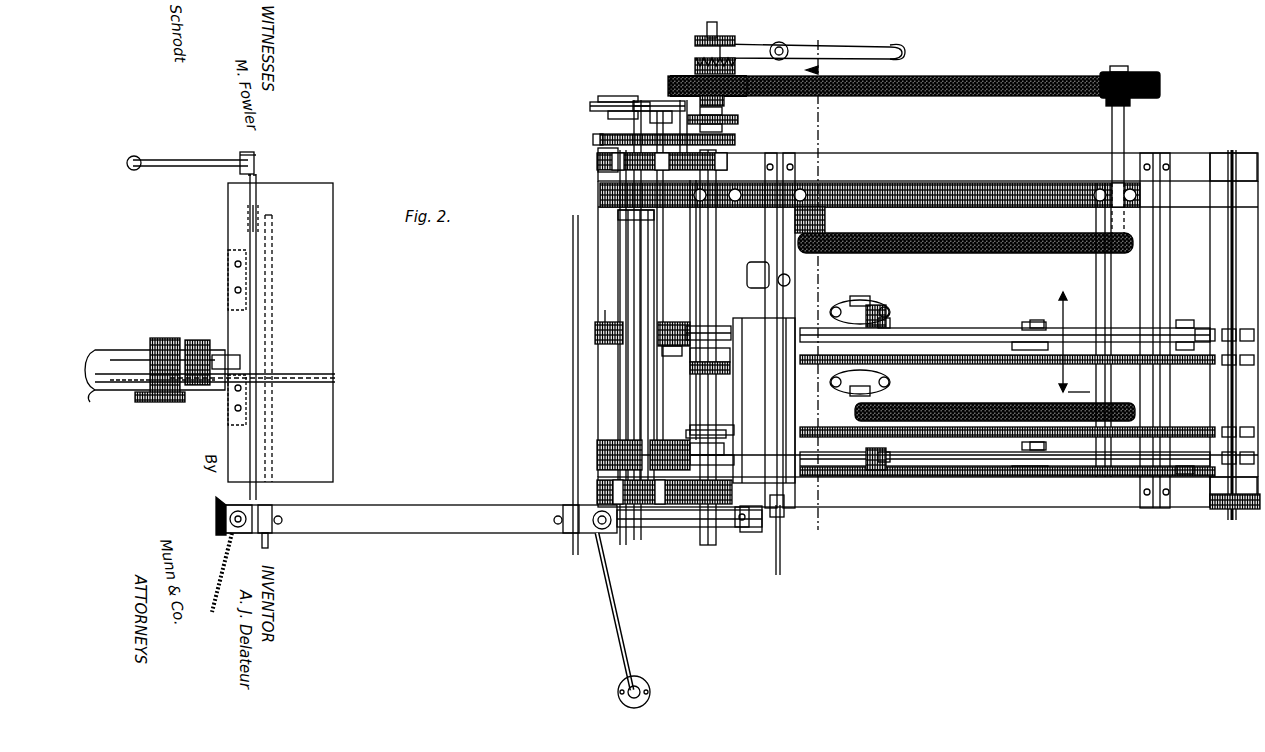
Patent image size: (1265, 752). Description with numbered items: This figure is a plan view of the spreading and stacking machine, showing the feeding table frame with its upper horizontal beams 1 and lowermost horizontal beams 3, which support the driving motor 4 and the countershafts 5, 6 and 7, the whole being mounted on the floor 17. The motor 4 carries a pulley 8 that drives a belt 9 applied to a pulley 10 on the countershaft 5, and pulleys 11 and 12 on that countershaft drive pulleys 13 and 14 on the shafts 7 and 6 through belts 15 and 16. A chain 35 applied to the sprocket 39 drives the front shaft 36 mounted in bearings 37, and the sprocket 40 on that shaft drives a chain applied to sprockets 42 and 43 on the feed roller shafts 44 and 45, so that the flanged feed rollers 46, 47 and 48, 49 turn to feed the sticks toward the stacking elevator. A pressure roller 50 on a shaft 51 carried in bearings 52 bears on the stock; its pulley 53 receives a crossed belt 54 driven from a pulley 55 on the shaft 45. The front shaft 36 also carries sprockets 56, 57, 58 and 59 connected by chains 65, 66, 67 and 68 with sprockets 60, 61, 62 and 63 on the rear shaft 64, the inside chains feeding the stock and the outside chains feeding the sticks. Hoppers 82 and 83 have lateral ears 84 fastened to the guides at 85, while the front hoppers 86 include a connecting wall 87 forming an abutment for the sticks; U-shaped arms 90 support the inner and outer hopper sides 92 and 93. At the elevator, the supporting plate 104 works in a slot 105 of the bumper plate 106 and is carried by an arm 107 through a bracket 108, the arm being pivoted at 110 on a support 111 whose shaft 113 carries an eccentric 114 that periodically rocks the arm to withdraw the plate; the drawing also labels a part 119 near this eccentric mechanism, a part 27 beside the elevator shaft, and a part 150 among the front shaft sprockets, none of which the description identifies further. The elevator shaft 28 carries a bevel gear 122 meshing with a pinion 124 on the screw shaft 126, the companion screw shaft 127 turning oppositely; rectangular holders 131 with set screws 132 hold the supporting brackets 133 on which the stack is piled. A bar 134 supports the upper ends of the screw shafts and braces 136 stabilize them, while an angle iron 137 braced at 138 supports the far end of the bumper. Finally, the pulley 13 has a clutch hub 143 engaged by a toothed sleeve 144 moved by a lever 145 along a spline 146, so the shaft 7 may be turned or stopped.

The upper horizontal beams 1 is at (1092, 500).
The lowermost horizontal beams 3 is at (950, 205).
The driving motor 4 is at (860, 296).
The countershaft 5 is at (1102, 290).
The countershaft 6 is at (800, 220).
The countershaft 7 is at (878, 317).
The pulley 8 is at (870, 296).
The belt 9 is at (962, 395).
The pulley 10 is at (1085, 392).
The pulley 11 is at (1102, 78).
The pulley 12 is at (1100, 235).
The pulley 13 is at (742, 90).
The pulley 14 is at (808, 228).
The belt 15 is at (965, 92).
The belt 16 is at (966, 252).
The floor 17 is at (1166, 258).
The rod 27 is at (782, 575).
The stacking elevator shaft 28 is at (755, 268).
The chain 35 is at (740, 120).
The front shaft 36 is at (703, 246).
The bearings 37 is at (728, 160).
The sprocket 39 is at (720, 139).
The sprocket 40 is at (684, 160).
The sprocket 42 is at (647, 100).
The sprocket 43 is at (594, 140).
The feed roller shaft 44 is at (654, 214).
The feed roller shaft 45 is at (606, 212).
The feed roller 46 is at (669, 322).
The feed roller 47 is at (625, 102).
The feed roller 48 is at (601, 317).
The feed roller 49 is at (598, 455).
The pressure roller 50 is at (620, 355).
The pressure roller shaft 51 is at (620, 186).
The bearings 52 is at (598, 160).
The pulley 53 is at (618, 97).
The crossed belt 54 is at (590, 110).
The pulley 55 is at (606, 116).
The sprocket 56 is at (692, 460).
The sprocket 57 is at (700, 422).
The sprocket 58 is at (671, 428).
The sprocket 59 is at (707, 332).
The sprocket 60 is at (1239, 451).
The sprocket 61 is at (1240, 422).
The sprocket 62 is at (1248, 368).
The sprocket 63 is at (1240, 321).
The rear shaft 64 is at (1232, 262).
The chain 65 is at (1234, 490).
The chain 66 is at (1218, 428).
The chain 67 is at (1218, 366).
The chain 68 is at (1205, 328).
The hopper 82 is at (1034, 322).
The hopper 83 is at (1180, 318).
The lateral ears 84 is at (1020, 322).
The fastening 85 is at (1032, 320).
The front hopper 86 is at (878, 305).
The connecting wall 87 is at (900, 308).
The U-shaped arm 90 is at (742, 530).
The inner hopper side 92 is at (745, 395).
The outer hopper side 93 is at (730, 420).
The supporting plate 104 is at (333, 265).
The slot 105 is at (258, 180).
The bumper plate 106 is at (248, 225).
The arm 107 is at (240, 360).
The bracket 108 is at (222, 335).
The pivot 110 is at (198, 340).
The support 111 is at (114, 350).
The shaft 113 is at (162, 338).
The eccentric 114 is at (100, 392).
The gear 119 is at (148, 402).
The bevel gear 122 is at (240, 505).
The pinion 124 is at (246, 515).
The screw shaft 126 is at (236, 535).
The screw shaft 127 is at (608, 530).
The rectangular holder 131 is at (270, 545).
The set screw 132 is at (300, 533).
The supporting brackets 133 is at (273, 430).
The bar 134 is at (423, 503).
The braces 136 is at (625, 650).
The angle iron 137 is at (248, 140).
The brace 138 is at (212, 150).
The clutch hub 143 is at (714, 14).
The toothed sleeve 144 is at (690, 67).
The lever 145 is at (872, 38).
The spline 146 is at (722, 36).
The gear 150 is at (722, 372).